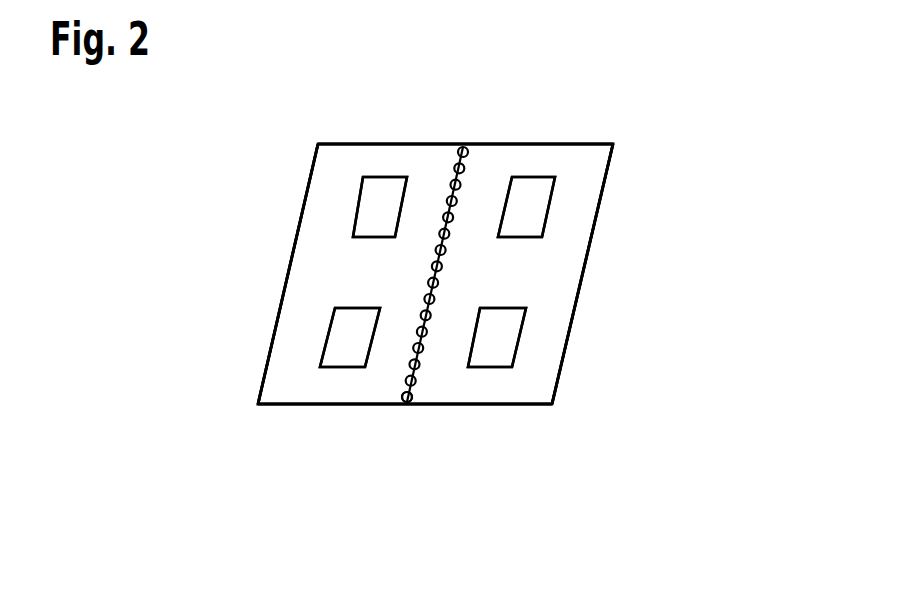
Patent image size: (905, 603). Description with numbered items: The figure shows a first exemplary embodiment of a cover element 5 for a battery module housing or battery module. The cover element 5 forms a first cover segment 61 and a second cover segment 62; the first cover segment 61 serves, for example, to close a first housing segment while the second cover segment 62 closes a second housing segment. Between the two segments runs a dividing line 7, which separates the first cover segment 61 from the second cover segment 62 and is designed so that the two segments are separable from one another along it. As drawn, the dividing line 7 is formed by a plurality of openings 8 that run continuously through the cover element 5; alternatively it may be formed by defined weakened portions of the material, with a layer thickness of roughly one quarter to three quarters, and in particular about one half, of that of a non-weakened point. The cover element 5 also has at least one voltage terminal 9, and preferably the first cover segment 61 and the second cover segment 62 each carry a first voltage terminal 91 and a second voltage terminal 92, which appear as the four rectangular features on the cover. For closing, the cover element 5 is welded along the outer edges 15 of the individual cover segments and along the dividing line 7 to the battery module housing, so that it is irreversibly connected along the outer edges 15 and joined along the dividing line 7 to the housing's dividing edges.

The cover element 5 is at (266, 491).
The dividing line 7 is at (458, 155).
The openings 8 is at (410, 388).
The voltage terminal 9 is at (437, 272).
The outer edges 15 is at (390, 144).
The first cover segment 61 is at (293, 355).
The second cover segment 62 is at (538, 355).
The first voltage terminal 91 is at (382, 204).
The second voltage terminal 92 is at (343, 352).